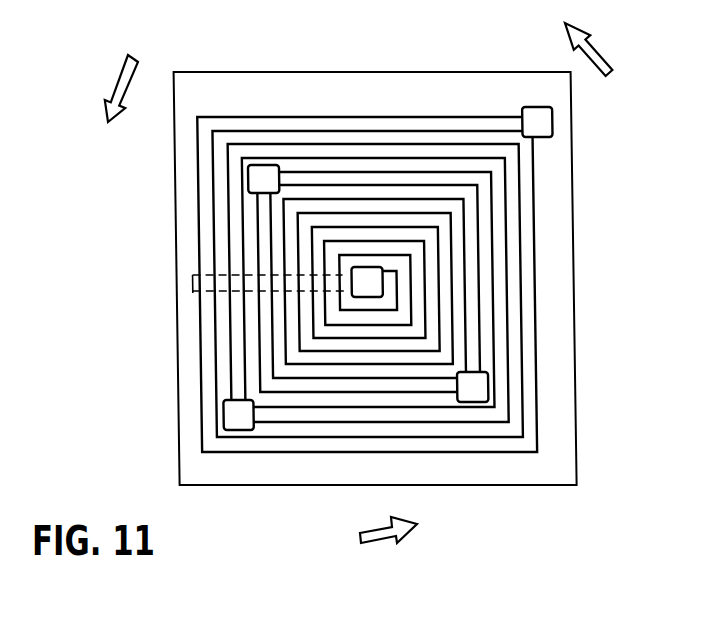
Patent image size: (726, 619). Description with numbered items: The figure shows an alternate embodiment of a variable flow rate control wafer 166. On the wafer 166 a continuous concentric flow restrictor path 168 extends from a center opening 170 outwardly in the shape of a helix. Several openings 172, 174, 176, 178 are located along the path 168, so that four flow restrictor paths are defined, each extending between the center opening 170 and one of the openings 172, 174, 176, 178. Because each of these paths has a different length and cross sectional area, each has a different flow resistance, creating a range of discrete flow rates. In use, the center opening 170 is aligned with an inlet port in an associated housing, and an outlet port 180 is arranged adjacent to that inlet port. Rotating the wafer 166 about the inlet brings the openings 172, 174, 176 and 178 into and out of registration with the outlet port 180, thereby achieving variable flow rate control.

The wafer 166 is at (553, 223).
The flow restrictor path 168 is at (527, 295).
The center opening 170 is at (367, 283).
The opening 172 is at (480, 389).
The opening 174 is at (262, 177).
The opening 176 is at (232, 417).
The opening 178 is at (536, 127).
The outlet port 180 is at (190, 286).